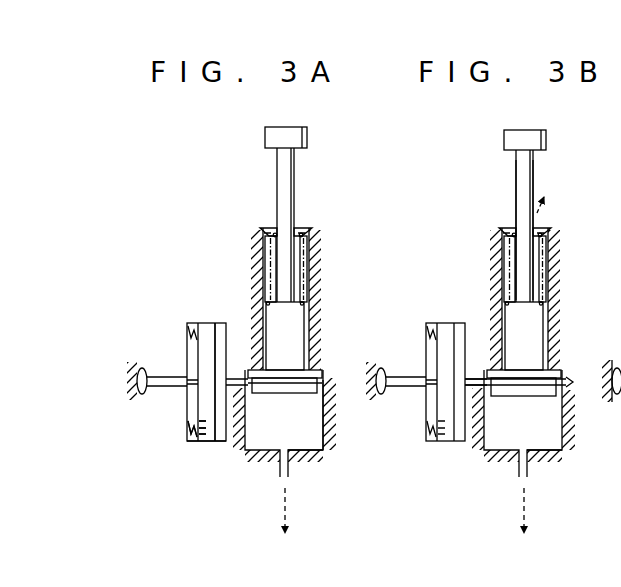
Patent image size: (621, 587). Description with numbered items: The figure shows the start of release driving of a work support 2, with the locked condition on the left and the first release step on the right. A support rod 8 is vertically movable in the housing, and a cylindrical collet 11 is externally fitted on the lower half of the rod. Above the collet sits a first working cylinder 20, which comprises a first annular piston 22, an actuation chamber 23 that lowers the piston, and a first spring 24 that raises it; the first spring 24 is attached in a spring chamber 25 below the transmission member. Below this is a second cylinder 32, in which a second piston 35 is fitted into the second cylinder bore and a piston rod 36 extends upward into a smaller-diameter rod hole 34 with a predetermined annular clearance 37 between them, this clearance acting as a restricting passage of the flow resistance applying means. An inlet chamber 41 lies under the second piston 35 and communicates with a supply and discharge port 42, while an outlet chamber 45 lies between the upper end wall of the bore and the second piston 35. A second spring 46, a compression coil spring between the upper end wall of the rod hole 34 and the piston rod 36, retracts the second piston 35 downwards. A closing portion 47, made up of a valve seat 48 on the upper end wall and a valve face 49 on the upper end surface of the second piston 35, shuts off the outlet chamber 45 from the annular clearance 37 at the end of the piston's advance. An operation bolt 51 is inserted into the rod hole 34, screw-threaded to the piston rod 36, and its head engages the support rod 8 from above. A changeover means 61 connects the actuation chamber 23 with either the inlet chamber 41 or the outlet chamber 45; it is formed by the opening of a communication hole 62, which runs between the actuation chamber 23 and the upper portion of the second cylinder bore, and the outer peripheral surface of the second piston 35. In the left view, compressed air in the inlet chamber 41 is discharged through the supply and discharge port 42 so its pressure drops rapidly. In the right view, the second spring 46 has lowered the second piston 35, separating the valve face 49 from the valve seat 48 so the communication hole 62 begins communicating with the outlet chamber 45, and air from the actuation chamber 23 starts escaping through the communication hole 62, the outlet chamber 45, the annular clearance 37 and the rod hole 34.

In FIG. 3A, the work support 2 is at (191, 213).
In FIG. 3A, the support rod 8 is at (141, 367).
In FIG. 3A, the collet 11 is at (168, 375).
In FIG. 3A, the first working cylinder 20 is at (193, 457).
In FIG. 3A, the first annular piston 22 is at (190, 322).
In FIG. 3A, the actuation chamber 23 is at (221, 442).
In FIG. 3B, the actuation chamber 23 is at (459, 442).
In FIG. 3A, the first spring 24 is at (189, 436).
In FIG. 3A, the spring chamber 25 is at (190, 406).
In FIG. 3A, the second cylinder 32 is at (250, 477).
In FIG. 3B, the rod hole 34 is at (553, 274).
In FIG. 3A, the second piston 35 is at (330, 382).
In FIG. 3B, the second piston 35 is at (571, 385).
In FIG. 3A, the piston rod 36 is at (305, 322).
In FIG. 3A, the annular clearance 37 is at (312, 358).
In FIG. 3B, the annular clearance 37 is at (553, 360).
In FIG. 3A, the inlet chamber 41 is at (318, 437).
In FIG. 3B, the inlet chamber 41 is at (548, 443).
In FIG. 3A, the supply and discharge port 42 is at (289, 466).
In FIG. 3B, the outlet chamber 45 is at (565, 375).
In FIG. 3A, the second spring 46 is at (313, 238).
In FIG. 3B, the second spring 46 is at (553, 238).
In FIG. 3B, the closing portion 47 is at (446, 224).
In FIG. 3B, the valve seat 48 is at (492, 362).
In FIG. 3B, the valve face 49 is at (510, 357).
In FIG. 3A, the operation bolt 51 is at (308, 138).
In FIG. 3B, the operation bolt 51 is at (547, 140).
In FIG. 3A, the changeover means 61 is at (221, 222).
In FIG. 3A, the communication hole 62 is at (236, 375).
In FIG. 3B, the communication hole 62 is at (475, 388).